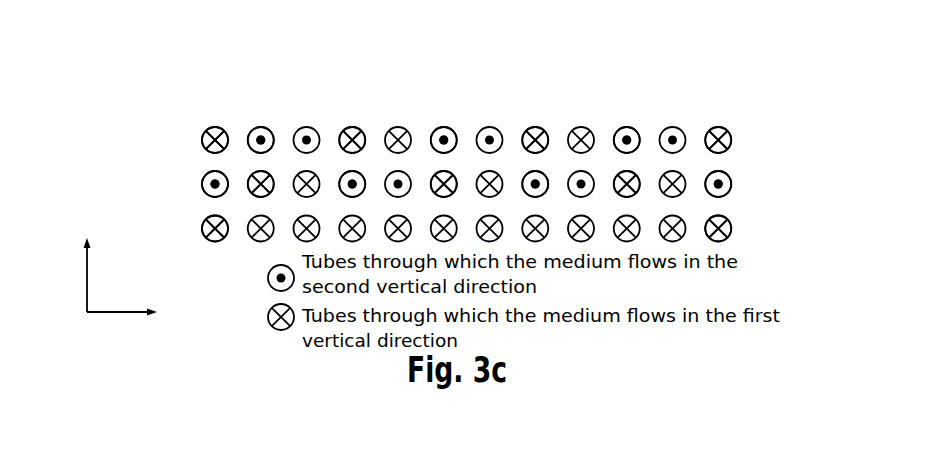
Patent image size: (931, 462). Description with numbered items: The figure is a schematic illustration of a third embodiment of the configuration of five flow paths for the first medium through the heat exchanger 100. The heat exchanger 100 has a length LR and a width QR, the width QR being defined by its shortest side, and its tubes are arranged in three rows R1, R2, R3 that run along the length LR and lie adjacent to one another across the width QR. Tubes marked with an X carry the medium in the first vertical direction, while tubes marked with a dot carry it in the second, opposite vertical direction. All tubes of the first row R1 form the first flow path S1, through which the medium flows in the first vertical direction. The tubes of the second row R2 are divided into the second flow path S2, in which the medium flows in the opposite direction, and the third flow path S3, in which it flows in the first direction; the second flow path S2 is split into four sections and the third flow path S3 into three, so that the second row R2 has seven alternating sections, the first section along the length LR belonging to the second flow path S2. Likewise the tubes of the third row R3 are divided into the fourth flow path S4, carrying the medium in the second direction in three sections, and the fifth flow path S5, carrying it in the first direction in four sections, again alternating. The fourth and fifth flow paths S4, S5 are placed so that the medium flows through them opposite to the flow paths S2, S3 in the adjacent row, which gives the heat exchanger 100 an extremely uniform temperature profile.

The heat exchanger 100 is at (163, 103).
The first row R1 is at (731, 229).
The second row R2 is at (731, 185).
The third row R3 is at (731, 142).
The first flow path S1 is at (203, 224).
The second flow path S2 is at (203, 180).
The third flow path S3 is at (252, 175).
The fourth flow path S4 is at (261, 127).
The fifth flow path S5 is at (212, 127).
The width QR is at (106, 268).
The length LR is at (127, 328).